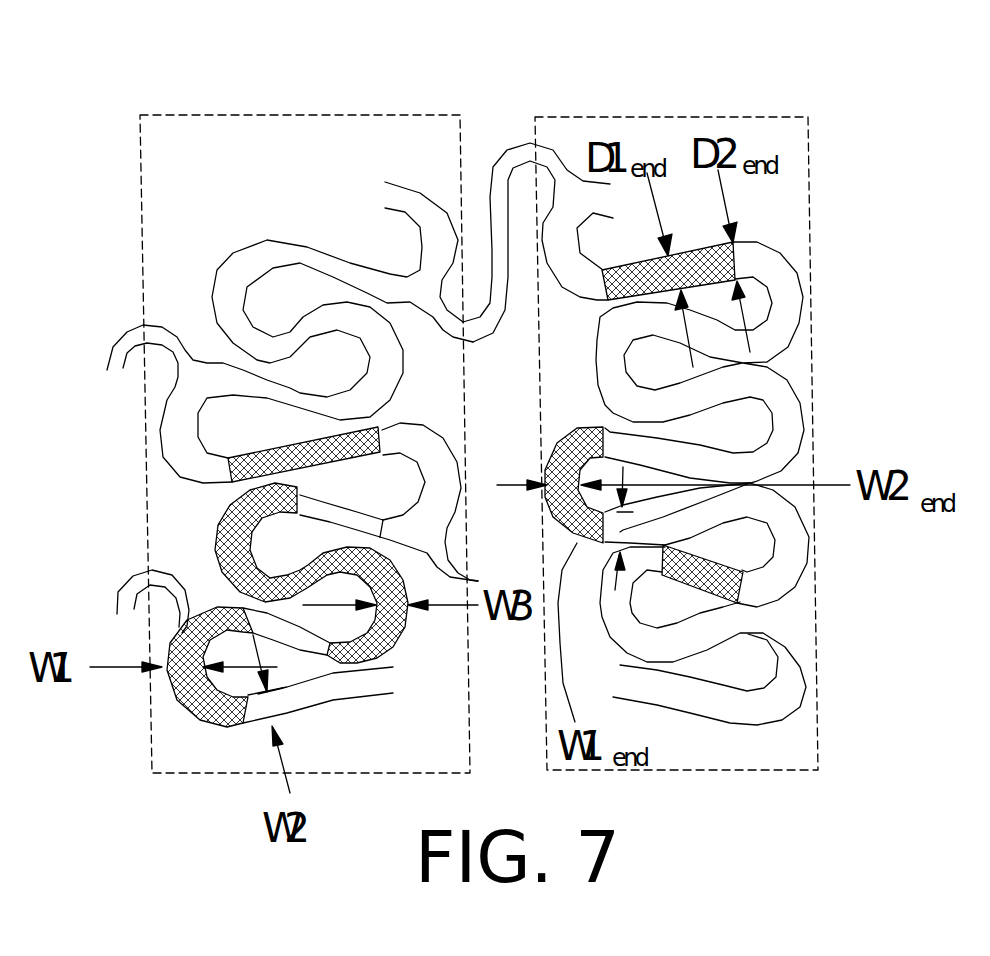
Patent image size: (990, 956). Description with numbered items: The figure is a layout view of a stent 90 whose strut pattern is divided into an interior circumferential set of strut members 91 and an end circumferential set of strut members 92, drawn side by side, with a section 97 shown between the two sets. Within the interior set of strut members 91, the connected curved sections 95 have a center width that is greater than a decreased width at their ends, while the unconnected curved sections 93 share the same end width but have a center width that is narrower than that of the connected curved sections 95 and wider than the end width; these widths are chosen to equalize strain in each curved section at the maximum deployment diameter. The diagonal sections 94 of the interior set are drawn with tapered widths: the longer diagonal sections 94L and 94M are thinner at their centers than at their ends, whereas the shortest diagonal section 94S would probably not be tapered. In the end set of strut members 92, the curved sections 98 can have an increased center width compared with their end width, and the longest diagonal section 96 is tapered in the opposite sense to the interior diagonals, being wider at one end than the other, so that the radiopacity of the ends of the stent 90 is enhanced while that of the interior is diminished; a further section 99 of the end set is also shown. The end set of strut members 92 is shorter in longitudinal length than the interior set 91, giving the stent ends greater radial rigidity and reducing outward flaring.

The stent 90 is at (495, 90).
The interior circumferential sets of strut members 91 is at (202, 113).
The end circumferential sets of strut members 92 is at (771, 113).
The unconnected curved sections 93 is at (265, 584).
The strip segment 94 is at (318, 709).
The diagonal section 94L is at (304, 452).
The diagonal section 94M is at (389, 526).
The shortest diagonal section 94S is at (311, 573).
The connected curved sections 95 is at (275, 513).
The longest diagonal section 96 is at (645, 279).
The connecting loop 97 is at (536, 258).
The curved sections 98 is at (677, 424).
The end segment 99 is at (703, 621).